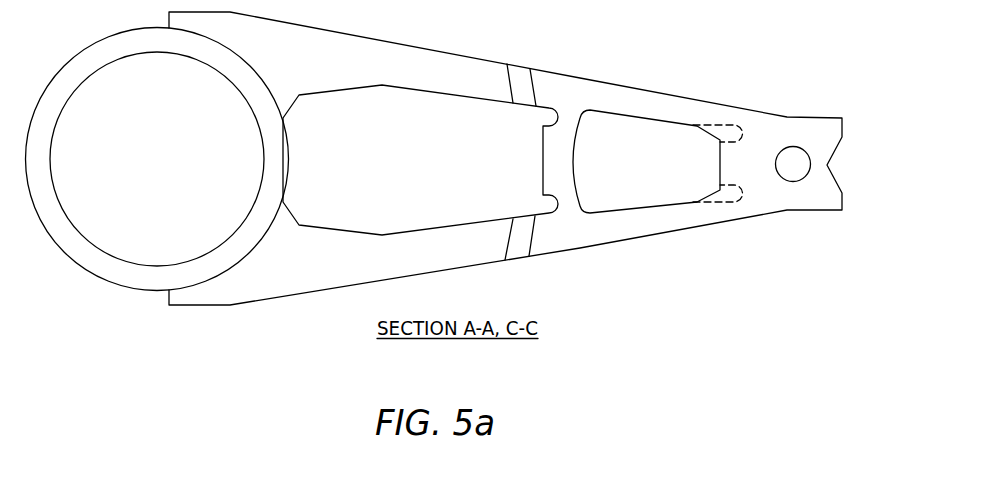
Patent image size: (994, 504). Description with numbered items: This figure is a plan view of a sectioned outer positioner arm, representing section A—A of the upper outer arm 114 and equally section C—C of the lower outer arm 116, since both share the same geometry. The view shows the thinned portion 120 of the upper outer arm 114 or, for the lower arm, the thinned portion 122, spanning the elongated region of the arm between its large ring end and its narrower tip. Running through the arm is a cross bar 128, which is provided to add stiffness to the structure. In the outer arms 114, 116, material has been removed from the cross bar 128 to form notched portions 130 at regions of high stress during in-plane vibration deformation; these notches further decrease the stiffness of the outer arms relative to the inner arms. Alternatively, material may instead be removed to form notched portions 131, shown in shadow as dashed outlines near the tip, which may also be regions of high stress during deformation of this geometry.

The upper outer arm 114 is at (434, 180).
The lower outer arm 116 is at (685, 260).
The thinned portion 120 is at (623, 136).
The thinned portion 122 is at (742, 100).
The cross bar 128 is at (576, 165).
The notched portions 130 is at (551, 116).
The notched portions 131 is at (733, 127).